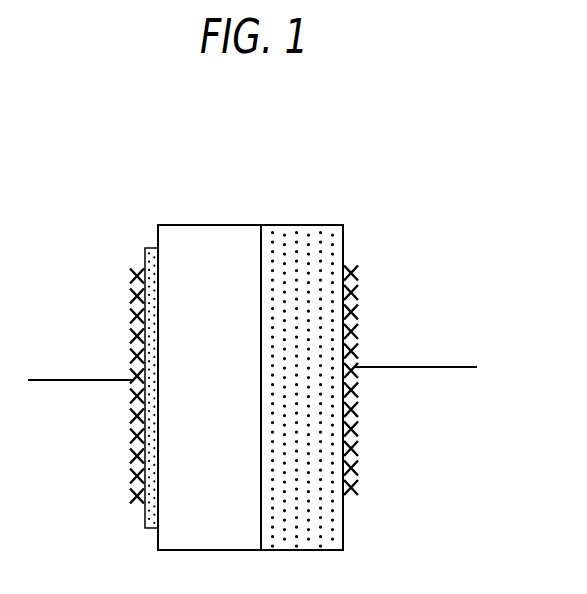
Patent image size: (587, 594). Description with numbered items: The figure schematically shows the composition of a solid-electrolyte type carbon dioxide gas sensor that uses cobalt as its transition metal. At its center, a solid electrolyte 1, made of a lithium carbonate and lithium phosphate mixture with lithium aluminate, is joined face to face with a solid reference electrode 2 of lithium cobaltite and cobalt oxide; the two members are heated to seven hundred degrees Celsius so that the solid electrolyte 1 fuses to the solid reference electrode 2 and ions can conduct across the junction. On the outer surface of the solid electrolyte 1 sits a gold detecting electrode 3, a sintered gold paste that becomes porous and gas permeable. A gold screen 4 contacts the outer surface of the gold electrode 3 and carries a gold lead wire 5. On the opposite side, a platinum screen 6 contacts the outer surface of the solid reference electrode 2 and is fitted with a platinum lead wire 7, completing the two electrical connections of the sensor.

The solid electrolyte 1 is at (197, 223).
The solid reference electrode 2 is at (322, 223).
The gold electrode (detecting electrode) 3 is at (147, 248).
The gold screen 4 is at (132, 278).
The gold lead wire 5 is at (100, 380).
The platinum screen 6 is at (357, 288).
The platinum lead wire 7 is at (403, 367).